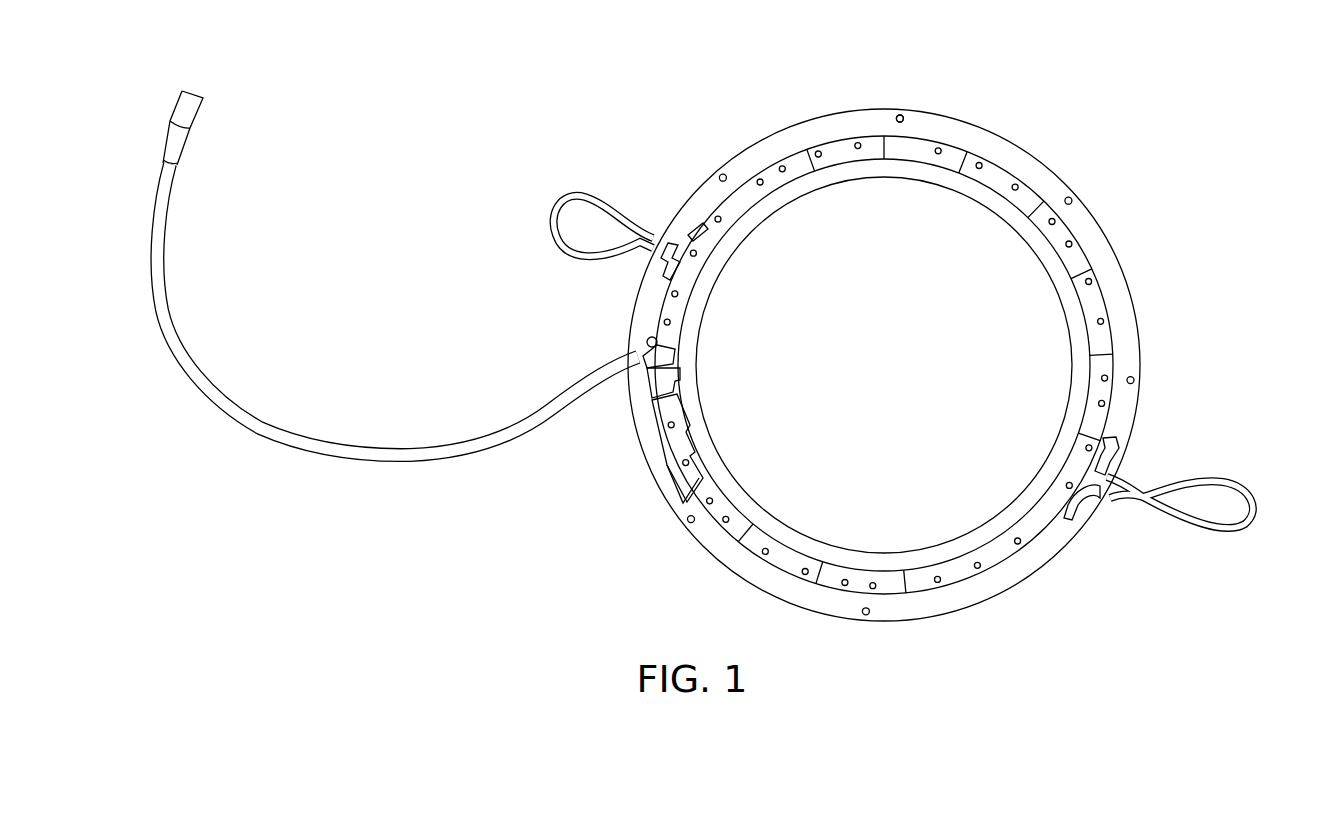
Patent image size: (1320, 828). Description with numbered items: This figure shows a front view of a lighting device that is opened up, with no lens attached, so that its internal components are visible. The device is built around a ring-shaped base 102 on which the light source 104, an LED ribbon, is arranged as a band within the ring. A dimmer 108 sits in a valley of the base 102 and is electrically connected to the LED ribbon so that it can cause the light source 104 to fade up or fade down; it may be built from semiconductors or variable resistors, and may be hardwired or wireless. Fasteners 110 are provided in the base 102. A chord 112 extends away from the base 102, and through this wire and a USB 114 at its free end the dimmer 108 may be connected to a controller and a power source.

The base 102 is at (1143, 338).
The light source 104 is at (1075, 260).
The dimmer 108 is at (683, 417).
The fasteners 110 is at (903, 112).
The chord 112 is at (483, 453).
The USB 114 is at (198, 113).